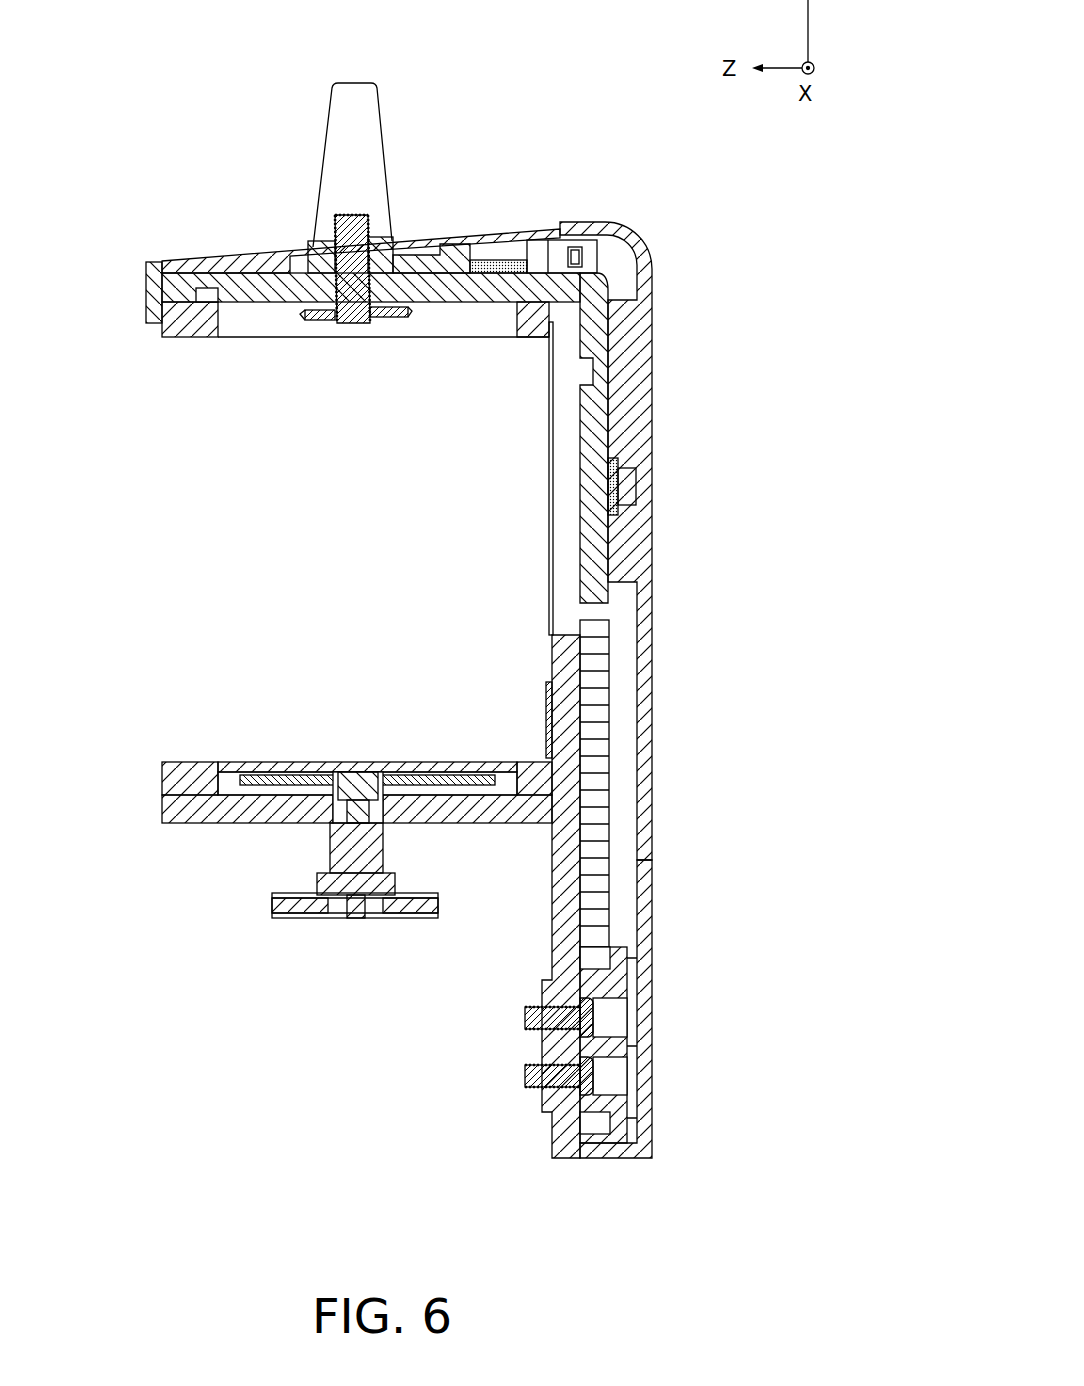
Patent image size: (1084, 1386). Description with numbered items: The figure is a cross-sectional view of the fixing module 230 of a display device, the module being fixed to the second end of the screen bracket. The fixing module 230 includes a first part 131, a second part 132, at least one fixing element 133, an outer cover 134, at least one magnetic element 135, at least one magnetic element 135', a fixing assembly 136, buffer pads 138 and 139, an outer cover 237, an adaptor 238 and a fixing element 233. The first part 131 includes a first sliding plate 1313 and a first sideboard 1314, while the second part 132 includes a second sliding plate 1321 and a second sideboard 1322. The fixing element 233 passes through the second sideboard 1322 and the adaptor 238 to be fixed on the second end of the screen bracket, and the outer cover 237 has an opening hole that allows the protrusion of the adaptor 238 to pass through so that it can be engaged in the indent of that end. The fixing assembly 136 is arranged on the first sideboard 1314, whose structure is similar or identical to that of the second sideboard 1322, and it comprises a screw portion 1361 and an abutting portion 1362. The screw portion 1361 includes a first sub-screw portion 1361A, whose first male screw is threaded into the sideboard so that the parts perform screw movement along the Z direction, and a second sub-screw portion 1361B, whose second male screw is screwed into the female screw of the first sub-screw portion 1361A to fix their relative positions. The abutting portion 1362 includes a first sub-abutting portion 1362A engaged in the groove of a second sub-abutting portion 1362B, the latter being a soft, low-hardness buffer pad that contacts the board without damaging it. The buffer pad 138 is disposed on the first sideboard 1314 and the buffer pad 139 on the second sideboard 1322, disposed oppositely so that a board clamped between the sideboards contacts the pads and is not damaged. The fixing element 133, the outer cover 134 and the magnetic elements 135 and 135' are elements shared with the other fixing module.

The adaptor 238 is at (360, 123).
The outer cover 237 is at (468, 237).
The magnetic element 135' is at (529, 231).
The fixing module 230 is at (668, 268).
The buffer pad 139 is at (193, 337).
The fixing element 233 is at (370, 323).
The second sideboard 1322 is at (487, 302).
The second part 132 is at (317, 324).
The second sliding plate 1321 is at (593, 481).
The magnetic element 135 is at (669, 486).
The buffer pad 138 is at (333, 760).
The abutting portion 1362 is at (362, 728).
The first sub-abutting portion 1362A is at (268, 775).
The second sub-abutting portion 1362B is at (316, 772).
The first sideboard 1314 is at (228, 808).
The first part 131 is at (330, 895).
The first sliding plate 1313 is at (560, 878).
The fixing assembly 136 is at (303, 933).
The second sub-screw portion 1361B is at (415, 998).
The first sub-screw portion 1361A is at (362, 915).
The screw portion 1361 is at (344, 933).
The outer cover 134 is at (650, 934).
The fixing element 133 is at (525, 1019).